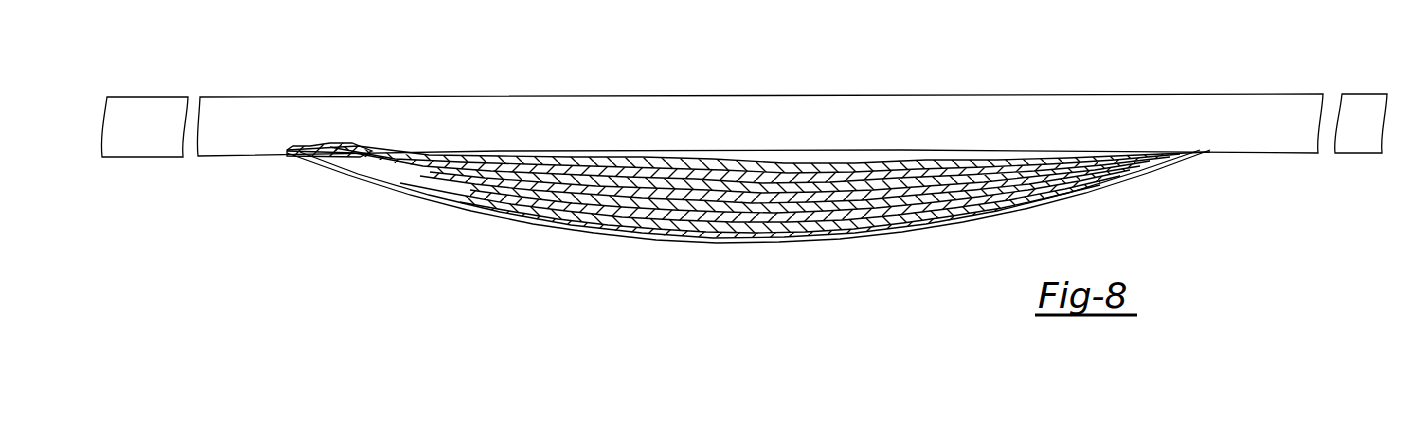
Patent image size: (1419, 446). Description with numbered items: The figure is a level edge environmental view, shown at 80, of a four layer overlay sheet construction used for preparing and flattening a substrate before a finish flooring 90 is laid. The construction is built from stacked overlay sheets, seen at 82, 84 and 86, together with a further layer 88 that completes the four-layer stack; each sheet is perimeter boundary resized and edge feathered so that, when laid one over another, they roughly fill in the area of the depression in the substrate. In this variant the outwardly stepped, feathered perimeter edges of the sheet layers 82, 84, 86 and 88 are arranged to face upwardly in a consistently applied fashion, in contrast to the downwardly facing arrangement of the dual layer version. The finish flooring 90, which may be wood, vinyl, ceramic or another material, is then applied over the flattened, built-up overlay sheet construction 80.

The four layer overlay sheet construction 80 is at (236, 66).
The overlay sheet layer 82 is at (738, 235).
The overlay sheet layer 84 is at (457, 187).
The overlay sheet layer 86 is at (383, 158).
The top ply layer 88 is at (690, 163).
The finish flooring 90 is at (870, 105).